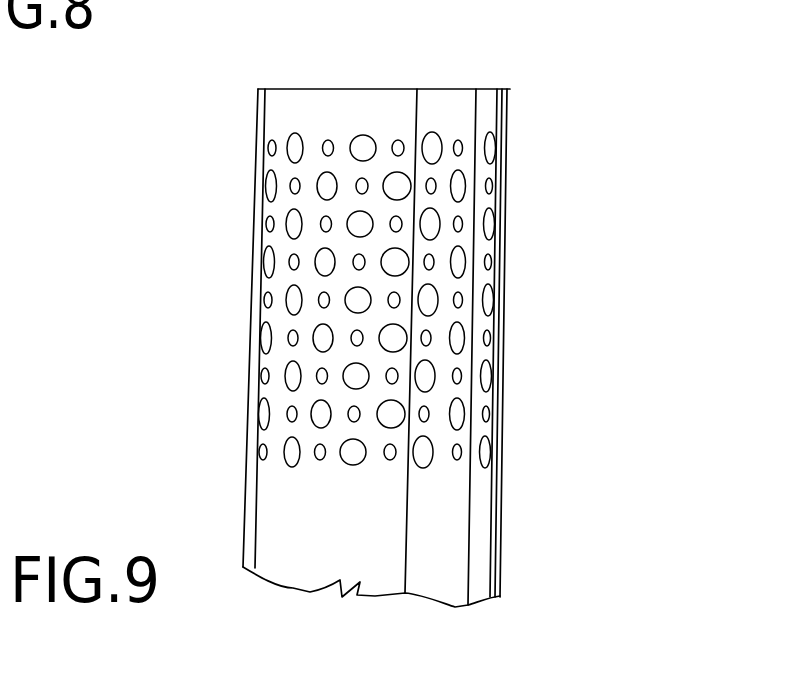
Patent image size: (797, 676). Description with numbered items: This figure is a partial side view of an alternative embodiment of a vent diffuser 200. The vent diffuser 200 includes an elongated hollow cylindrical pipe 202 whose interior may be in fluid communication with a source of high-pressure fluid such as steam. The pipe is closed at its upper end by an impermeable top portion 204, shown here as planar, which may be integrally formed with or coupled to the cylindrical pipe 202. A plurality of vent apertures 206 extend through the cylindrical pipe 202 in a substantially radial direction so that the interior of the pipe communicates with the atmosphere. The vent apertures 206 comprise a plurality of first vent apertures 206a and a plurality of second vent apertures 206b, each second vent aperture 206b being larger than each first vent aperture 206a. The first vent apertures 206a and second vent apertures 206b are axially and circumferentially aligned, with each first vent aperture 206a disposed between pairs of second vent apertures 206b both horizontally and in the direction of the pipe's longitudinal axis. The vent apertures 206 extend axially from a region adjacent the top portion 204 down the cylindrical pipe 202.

The vent diffuser 200 is at (530, 88).
The cylindrical pipe 202 is at (447, 523).
The top portion 204 is at (312, 97).
The vent apertures 206 is at (232, 135).
The first vent apertures 206a is at (458, 225).
The second vent apertures 206b is at (433, 150).